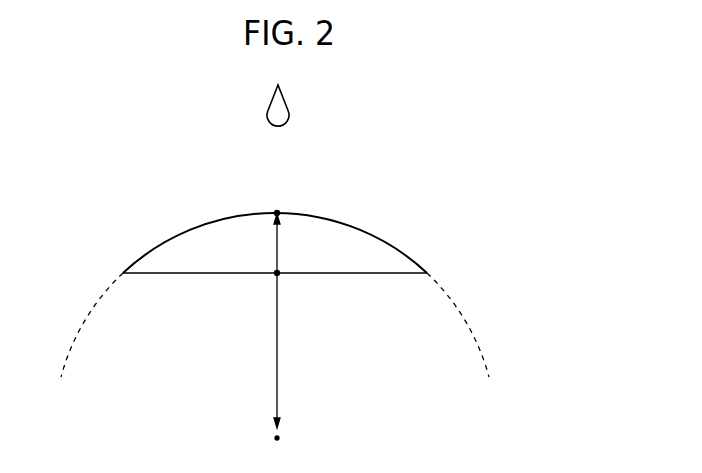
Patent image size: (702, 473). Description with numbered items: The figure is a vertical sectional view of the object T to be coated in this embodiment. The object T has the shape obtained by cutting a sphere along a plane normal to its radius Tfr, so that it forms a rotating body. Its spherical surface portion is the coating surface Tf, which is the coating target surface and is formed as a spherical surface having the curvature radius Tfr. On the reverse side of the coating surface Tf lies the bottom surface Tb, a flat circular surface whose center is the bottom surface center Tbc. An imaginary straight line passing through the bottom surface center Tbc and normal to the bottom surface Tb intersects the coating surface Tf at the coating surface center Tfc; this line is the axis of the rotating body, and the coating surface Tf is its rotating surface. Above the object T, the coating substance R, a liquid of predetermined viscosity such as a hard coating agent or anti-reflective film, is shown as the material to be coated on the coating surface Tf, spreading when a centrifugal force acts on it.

The coating substance R is at (287, 100).
The object T is at (405, 256).
The coating surface Tf is at (367, 228).
The bottom surface Tb is at (393, 275).
The coating surface center Tfc is at (277, 213).
The bottom surface center Tbc is at (277, 276).
The curvature radius Tfr is at (295, 327).